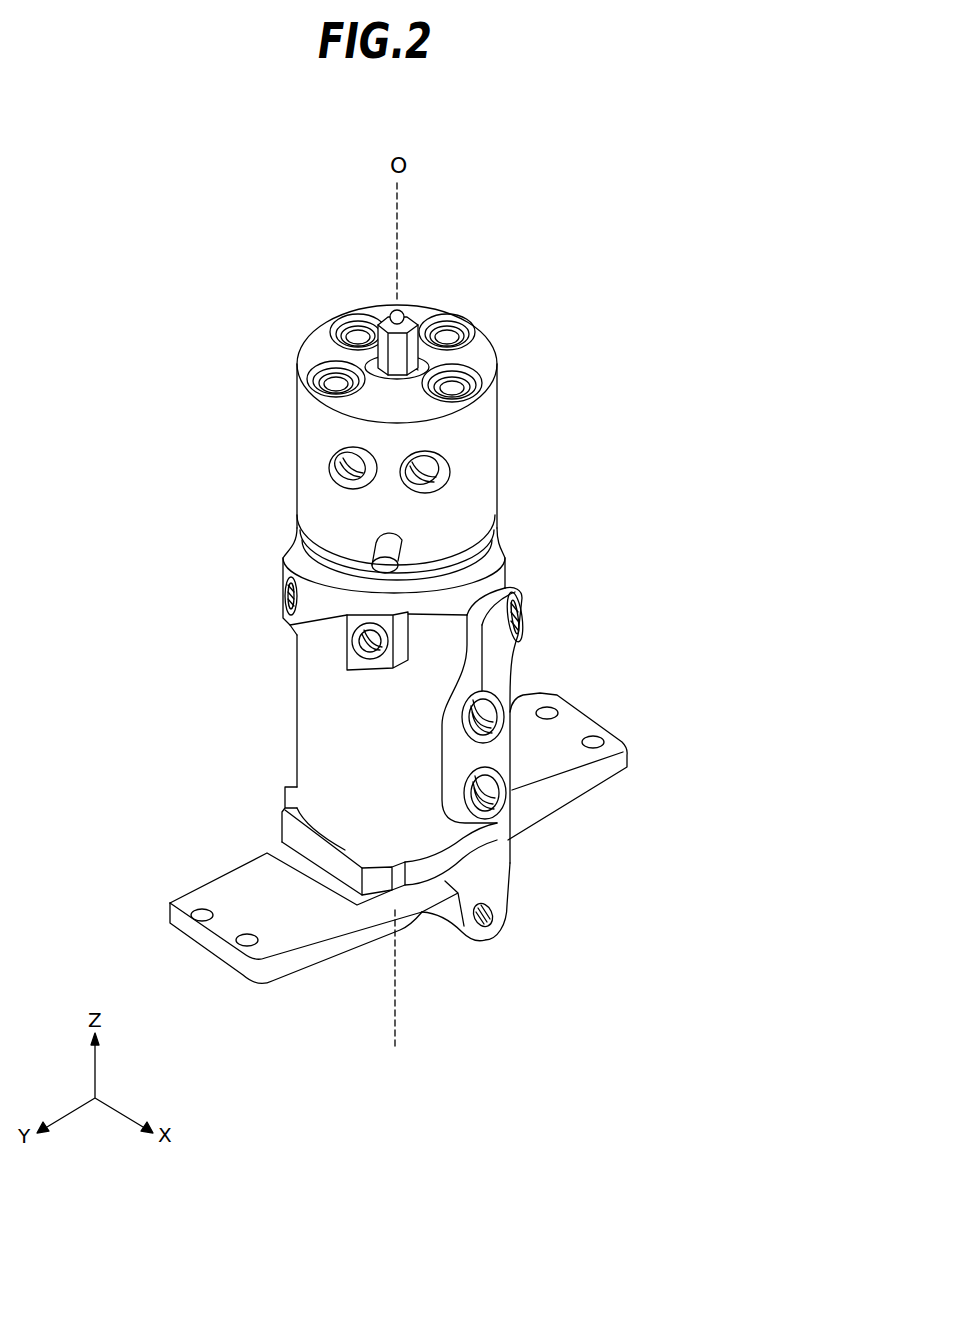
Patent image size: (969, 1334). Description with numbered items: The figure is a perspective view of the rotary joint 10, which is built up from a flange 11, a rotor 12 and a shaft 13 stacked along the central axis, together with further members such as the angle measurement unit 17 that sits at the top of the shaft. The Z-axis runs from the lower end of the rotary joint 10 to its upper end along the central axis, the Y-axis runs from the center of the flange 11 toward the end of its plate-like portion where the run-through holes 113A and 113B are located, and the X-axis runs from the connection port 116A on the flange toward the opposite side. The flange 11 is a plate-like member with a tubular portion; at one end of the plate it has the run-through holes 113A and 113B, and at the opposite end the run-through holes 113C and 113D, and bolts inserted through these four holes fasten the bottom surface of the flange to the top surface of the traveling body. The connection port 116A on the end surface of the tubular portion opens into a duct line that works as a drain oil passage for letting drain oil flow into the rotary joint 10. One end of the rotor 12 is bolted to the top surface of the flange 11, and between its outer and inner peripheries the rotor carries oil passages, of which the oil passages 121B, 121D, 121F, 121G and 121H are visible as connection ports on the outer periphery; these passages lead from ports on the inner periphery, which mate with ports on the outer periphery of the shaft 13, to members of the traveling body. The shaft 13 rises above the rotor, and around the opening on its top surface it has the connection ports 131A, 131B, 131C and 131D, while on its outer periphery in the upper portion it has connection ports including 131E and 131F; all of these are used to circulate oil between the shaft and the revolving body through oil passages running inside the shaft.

The rotary joint 10 is at (593, 298).
The flange 11 is at (628, 750).
The rotor 12 is at (285, 826).
The shaft 13 is at (477, 435).
The angle measurement unit 17 is at (420, 312).
The run-through hole 113A is at (237, 944).
The run-through hole 113B is at (200, 914).
The run-through hole 113C is at (598, 740).
The run-through hole 113D is at (552, 712).
The connection port 116A is at (490, 915).
The oil passage 121B is at (497, 815).
The oil passage 121D is at (510, 695).
The oil passage 121F is at (523, 610).
The oil passage 121G is at (283, 593).
The oil passage 121H is at (352, 652).
The connection port 131A is at (478, 312).
The connection port 131B is at (297, 364).
The connection port 131C is at (350, 312).
The connection port 131D is at (497, 379).
The connection port 131E is at (442, 478).
The connection port 131F is at (335, 470).